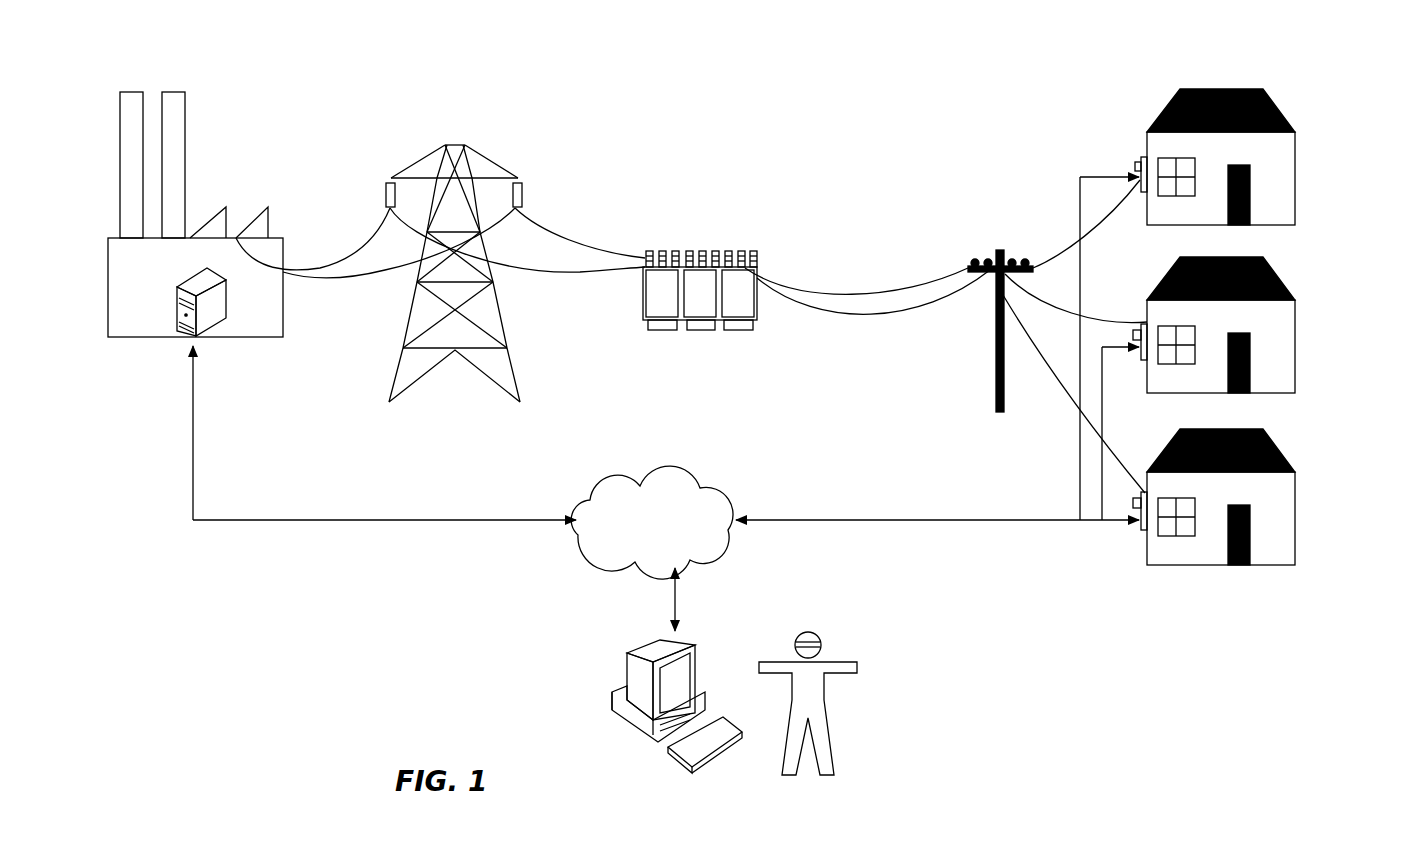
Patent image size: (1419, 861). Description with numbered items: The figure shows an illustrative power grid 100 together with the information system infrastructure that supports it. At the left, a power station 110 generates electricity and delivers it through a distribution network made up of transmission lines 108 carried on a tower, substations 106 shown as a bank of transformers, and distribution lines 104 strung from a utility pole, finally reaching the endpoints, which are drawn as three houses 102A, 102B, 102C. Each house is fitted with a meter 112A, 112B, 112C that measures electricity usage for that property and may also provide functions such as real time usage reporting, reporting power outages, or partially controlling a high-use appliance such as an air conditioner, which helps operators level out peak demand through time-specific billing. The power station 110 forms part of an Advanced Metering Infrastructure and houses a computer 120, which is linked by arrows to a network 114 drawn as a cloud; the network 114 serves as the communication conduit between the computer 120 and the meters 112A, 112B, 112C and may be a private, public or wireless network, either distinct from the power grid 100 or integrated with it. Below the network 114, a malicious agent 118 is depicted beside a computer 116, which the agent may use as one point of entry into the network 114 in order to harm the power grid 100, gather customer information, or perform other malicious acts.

The power grid 100 is at (984, 67).
The endpoint (house) 102A is at (1299, 175).
The endpoint (house) 102B is at (1299, 343).
The endpoint (house) 102C is at (1299, 512).
The distribution lines 104 is at (966, 240).
The substations 106 is at (713, 228).
The transmission lines 108 is at (509, 137).
The power station 110 is at (168, 275).
The meter 112A is at (1139, 170).
The meter 112B is at (1142, 322).
The meter 112C is at (1139, 527).
The network 114 is at (676, 478).
The computer 116 is at (631, 655).
The malicious agent 118 is at (831, 663).
The computer 120 is at (226, 306).